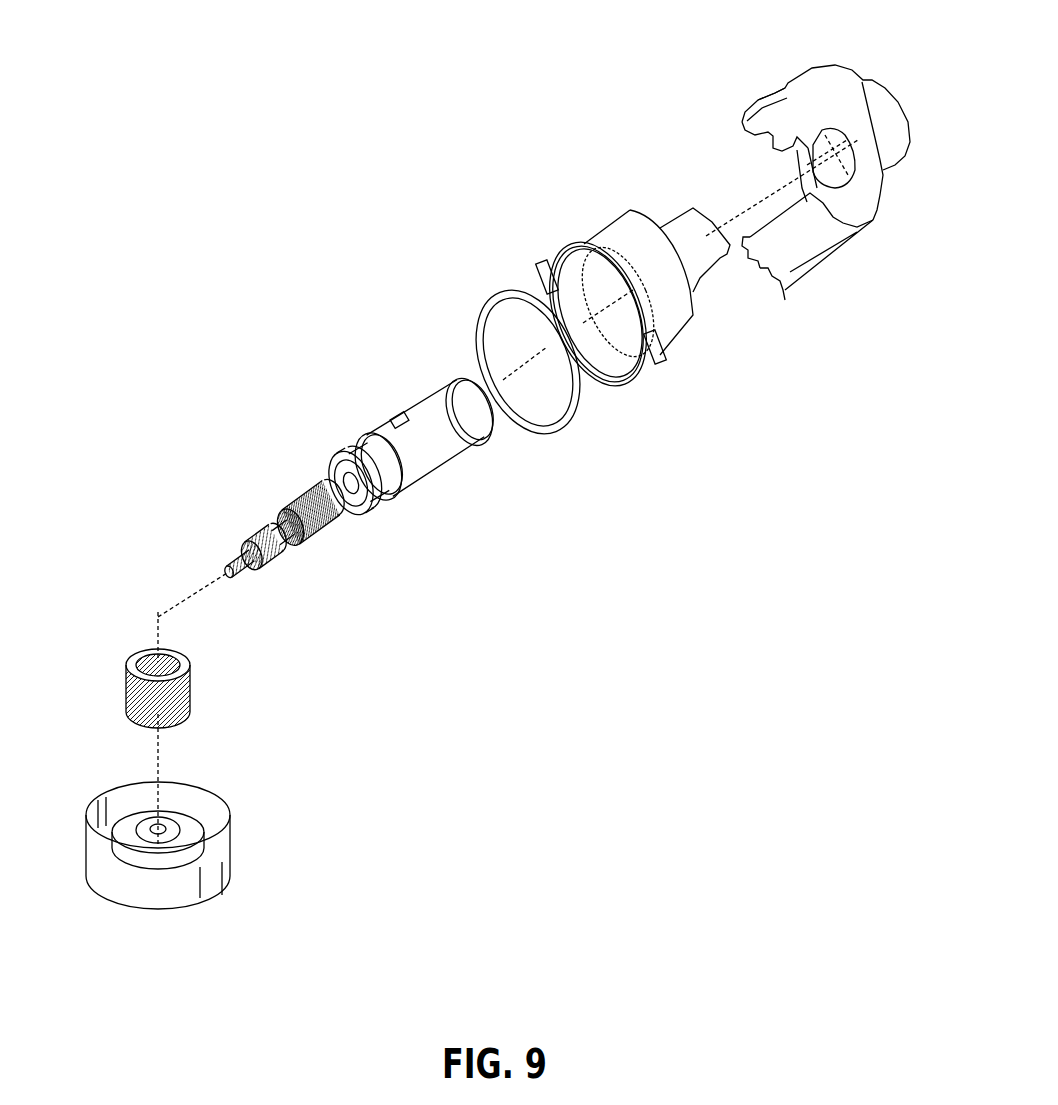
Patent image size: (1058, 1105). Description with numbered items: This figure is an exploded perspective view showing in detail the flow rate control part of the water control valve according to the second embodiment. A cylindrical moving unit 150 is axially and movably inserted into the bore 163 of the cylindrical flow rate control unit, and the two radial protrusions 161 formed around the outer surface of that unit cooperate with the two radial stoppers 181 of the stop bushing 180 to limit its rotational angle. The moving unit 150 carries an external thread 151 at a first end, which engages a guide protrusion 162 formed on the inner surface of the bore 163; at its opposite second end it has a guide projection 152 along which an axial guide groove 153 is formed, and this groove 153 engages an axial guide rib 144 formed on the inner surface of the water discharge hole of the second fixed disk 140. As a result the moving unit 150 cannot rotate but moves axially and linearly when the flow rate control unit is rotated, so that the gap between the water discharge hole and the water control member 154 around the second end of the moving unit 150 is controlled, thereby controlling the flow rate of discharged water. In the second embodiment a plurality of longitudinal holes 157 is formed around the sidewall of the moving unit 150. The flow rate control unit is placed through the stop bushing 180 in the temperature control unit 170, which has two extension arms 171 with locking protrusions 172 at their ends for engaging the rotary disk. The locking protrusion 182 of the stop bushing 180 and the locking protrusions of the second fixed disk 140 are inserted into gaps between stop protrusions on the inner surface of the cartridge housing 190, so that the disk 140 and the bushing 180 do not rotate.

The second fixed disk 140 is at (128, 780).
The axial guide rib 144 is at (207, 797).
The moving unit 150 is at (237, 531).
The external thread 151 is at (401, 472).
The guide projection 152 is at (263, 546).
The axial guide groove 153 is at (258, 550).
The water control member 154 is at (130, 653).
The longitudinal holes 157 is at (311, 513).
The radial protrusion 161 is at (379, 466).
The guide protrusion 162 is at (355, 480).
The bore 163 is at (470, 411).
The temperature control unit 170 is at (832, 207).
The extension arms 171 is at (782, 87).
The locking protrusions 172 is at (780, 300).
The stop bushing 180 is at (401, 457).
The radial stoppers 181 is at (742, 268).
The locking protrusion 182 is at (644, 370).
The cartridge housing 190 is at (625, 306).